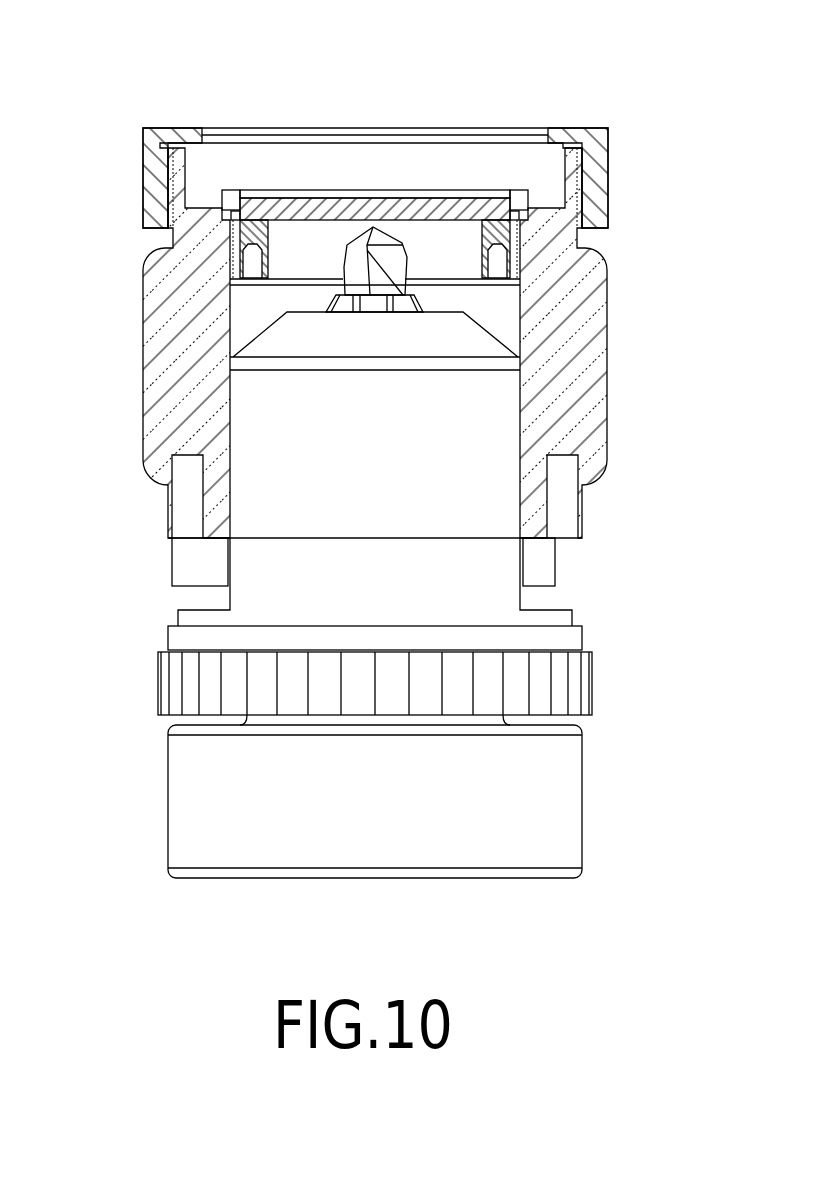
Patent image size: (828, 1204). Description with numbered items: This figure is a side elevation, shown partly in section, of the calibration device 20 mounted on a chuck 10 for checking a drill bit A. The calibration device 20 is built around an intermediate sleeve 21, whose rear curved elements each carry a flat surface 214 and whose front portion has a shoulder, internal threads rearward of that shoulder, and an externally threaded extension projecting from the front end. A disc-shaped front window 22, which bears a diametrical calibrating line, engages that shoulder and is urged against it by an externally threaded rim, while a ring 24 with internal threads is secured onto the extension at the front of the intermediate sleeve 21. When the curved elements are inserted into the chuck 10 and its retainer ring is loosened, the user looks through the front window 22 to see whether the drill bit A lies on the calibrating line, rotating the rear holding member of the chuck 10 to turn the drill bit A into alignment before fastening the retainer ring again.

The drill bit A is at (352, 245).
The front window 22 is at (440, 200).
The ring 24 is at (600, 178).
The intermediate sleeve 21 is at (588, 332).
The calibration device 20 is at (632, 526).
The flat surface 214 is at (192, 566).
The chuck 10 is at (633, 752).